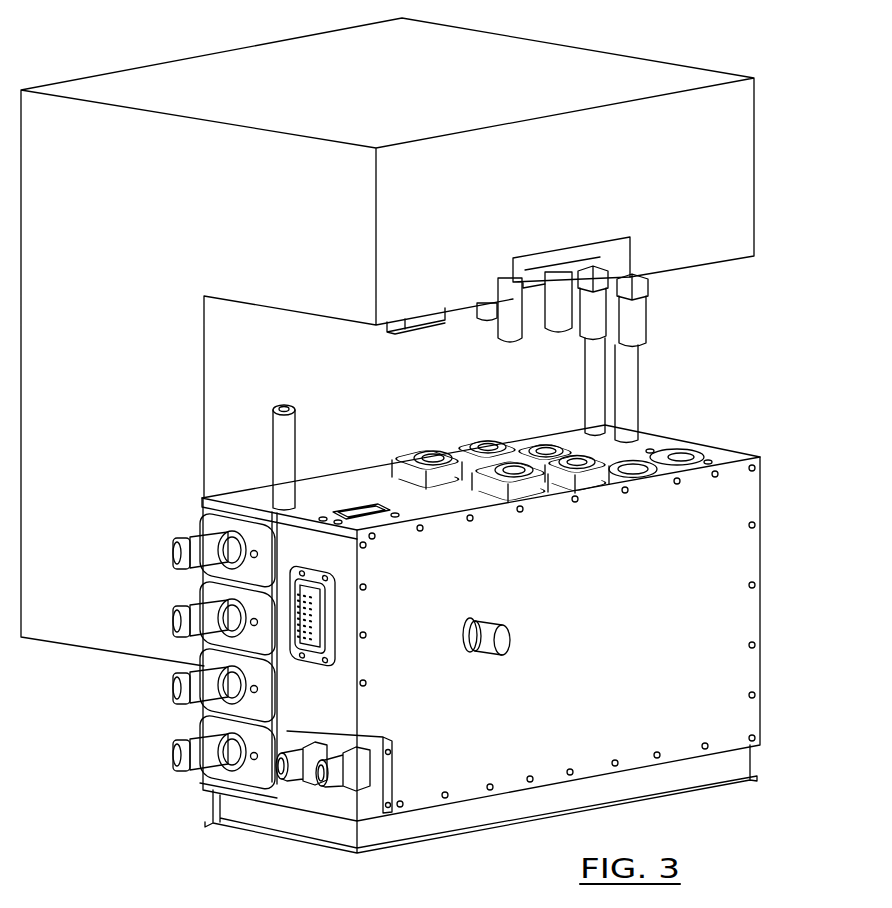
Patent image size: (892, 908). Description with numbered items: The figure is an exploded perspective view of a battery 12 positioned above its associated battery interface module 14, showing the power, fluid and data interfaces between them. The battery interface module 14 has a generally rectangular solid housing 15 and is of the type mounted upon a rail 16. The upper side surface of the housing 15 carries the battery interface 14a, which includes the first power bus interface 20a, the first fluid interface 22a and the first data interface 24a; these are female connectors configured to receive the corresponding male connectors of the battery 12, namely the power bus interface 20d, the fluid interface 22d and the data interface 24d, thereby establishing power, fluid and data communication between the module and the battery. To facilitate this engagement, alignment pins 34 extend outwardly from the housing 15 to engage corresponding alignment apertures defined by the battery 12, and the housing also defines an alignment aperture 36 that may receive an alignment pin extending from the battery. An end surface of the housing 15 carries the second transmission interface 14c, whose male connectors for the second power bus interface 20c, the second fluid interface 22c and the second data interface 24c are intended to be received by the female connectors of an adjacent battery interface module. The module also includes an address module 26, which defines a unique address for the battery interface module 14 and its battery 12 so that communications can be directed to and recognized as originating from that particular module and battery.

The battery 12 is at (48, 628).
The battery interface module 14 is at (762, 500).
The battery interface 14a is at (753, 458).
The second transmission interface 14c is at (360, 712).
The housing 15 is at (590, 633).
The rail 16 is at (735, 765).
The first power bus interface 20a is at (546, 448).
The second power bus interface 20c is at (185, 553).
The power bus interface 20d is at (557, 298).
The first fluid interface 22a is at (638, 466).
The second fluid interface 22c is at (320, 790).
The fluid interface 22d is at (637, 323).
The first data interface 24a is at (397, 506).
The second data interface 24c is at (332, 627).
The data interface 24d is at (420, 324).
The address module 26 is at (503, 637).
The alignment pin 34 is at (280, 432).
The alignment aperture 36 is at (676, 455).